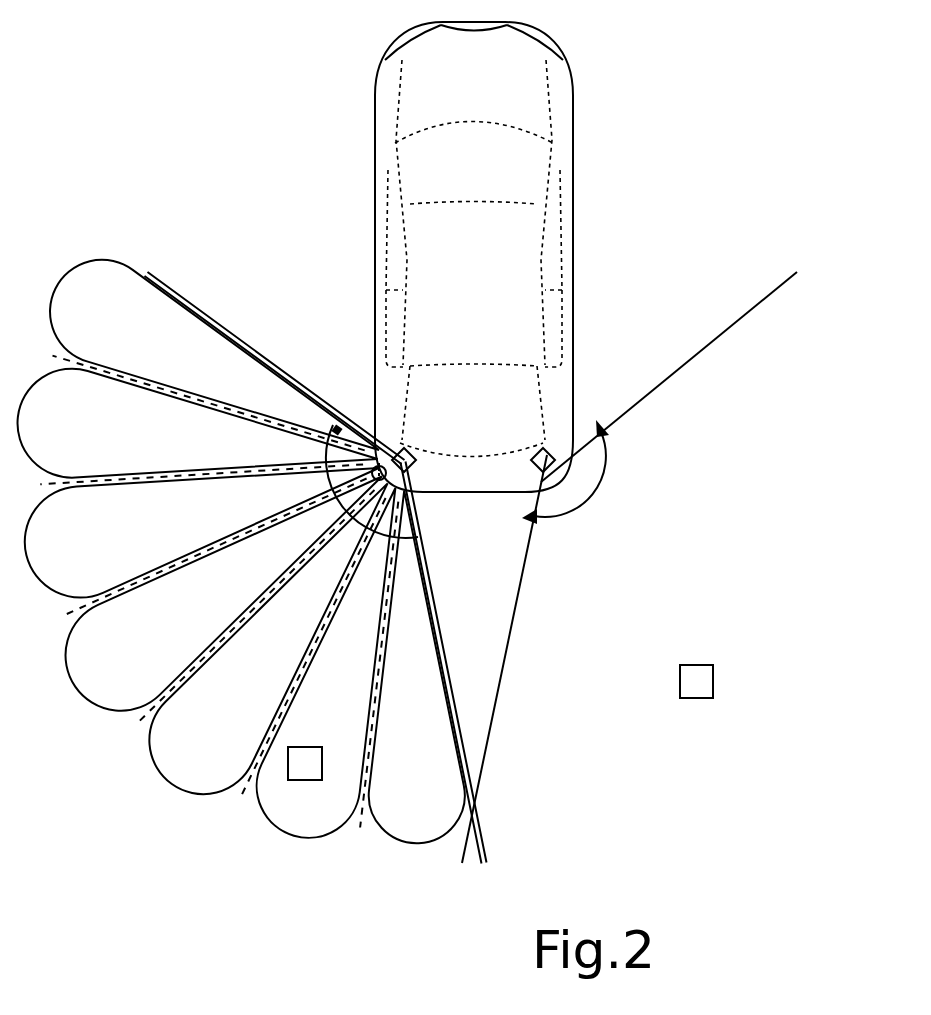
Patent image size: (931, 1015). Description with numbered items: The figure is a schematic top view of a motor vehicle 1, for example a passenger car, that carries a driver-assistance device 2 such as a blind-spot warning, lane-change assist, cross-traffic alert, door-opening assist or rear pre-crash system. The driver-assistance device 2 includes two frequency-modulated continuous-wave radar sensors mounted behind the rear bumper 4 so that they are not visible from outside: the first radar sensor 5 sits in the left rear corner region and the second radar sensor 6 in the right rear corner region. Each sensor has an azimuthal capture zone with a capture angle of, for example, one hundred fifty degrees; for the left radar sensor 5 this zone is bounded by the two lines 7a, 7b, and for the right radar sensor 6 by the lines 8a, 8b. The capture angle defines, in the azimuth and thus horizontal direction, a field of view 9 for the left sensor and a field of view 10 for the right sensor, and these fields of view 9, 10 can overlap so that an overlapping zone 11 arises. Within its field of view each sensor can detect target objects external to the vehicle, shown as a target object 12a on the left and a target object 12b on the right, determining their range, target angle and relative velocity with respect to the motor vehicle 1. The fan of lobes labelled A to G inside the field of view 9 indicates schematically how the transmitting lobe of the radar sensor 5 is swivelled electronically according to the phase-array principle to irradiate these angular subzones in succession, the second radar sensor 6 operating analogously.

The motor vehicle 1 is at (573, 215).
The driver-assistance device 2 is at (503, 397).
The rear bumper 4 is at (473, 493).
The first radar sensor 5 is at (413, 454).
The second radar sensor 6 is at (539, 453).
The line bounding capture zone of left radar sensor 7a is at (213, 318).
The line bounding capture zone of left radar sensor 7b is at (432, 600).
The line bounding capture zone of right radar sensor 8a is at (700, 347).
The line bounding capture zone of right radar sensor 8b is at (520, 613).
The field of view 9 is at (143, 653).
The field of view 10 is at (675, 572).
The overlapping zone 11 is at (473, 851).
The target object 12a is at (305, 780).
The target object 12b is at (703, 682).